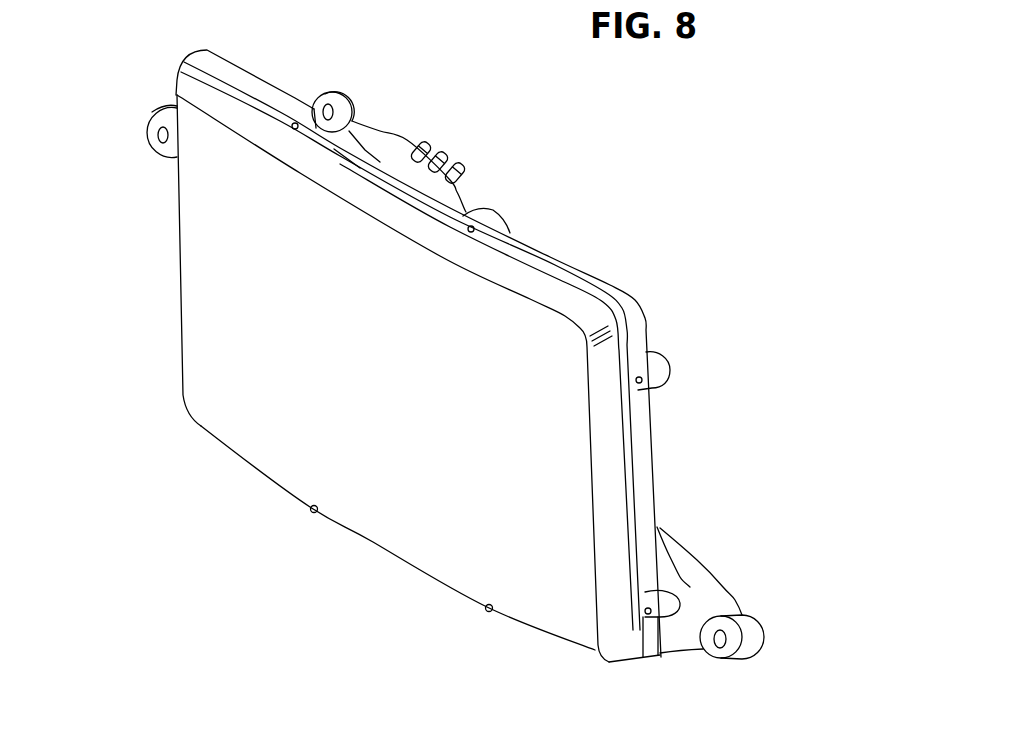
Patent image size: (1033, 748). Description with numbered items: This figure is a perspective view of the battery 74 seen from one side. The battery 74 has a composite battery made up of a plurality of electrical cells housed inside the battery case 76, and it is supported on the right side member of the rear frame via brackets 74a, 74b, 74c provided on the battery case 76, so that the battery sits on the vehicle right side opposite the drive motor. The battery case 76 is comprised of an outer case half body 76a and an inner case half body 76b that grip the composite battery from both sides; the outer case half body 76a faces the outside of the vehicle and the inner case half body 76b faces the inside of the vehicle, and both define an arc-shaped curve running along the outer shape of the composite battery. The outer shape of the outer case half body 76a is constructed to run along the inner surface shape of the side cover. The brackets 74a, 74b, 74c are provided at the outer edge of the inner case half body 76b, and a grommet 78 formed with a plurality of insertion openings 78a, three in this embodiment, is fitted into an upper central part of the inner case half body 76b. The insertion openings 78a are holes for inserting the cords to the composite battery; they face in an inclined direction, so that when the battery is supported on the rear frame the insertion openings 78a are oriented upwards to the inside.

The battery 74 is at (556, 216).
The bracket 74a is at (688, 638).
The bracket 74b is at (340, 66).
The bracket 74c is at (152, 148).
The battery case 76 is at (158, 338).
The outer case half body 76a is at (403, 522).
The inner case half body 76b is at (641, 303).
The grommet 78 is at (465, 138).
The insertion opening 78a is at (433, 140).